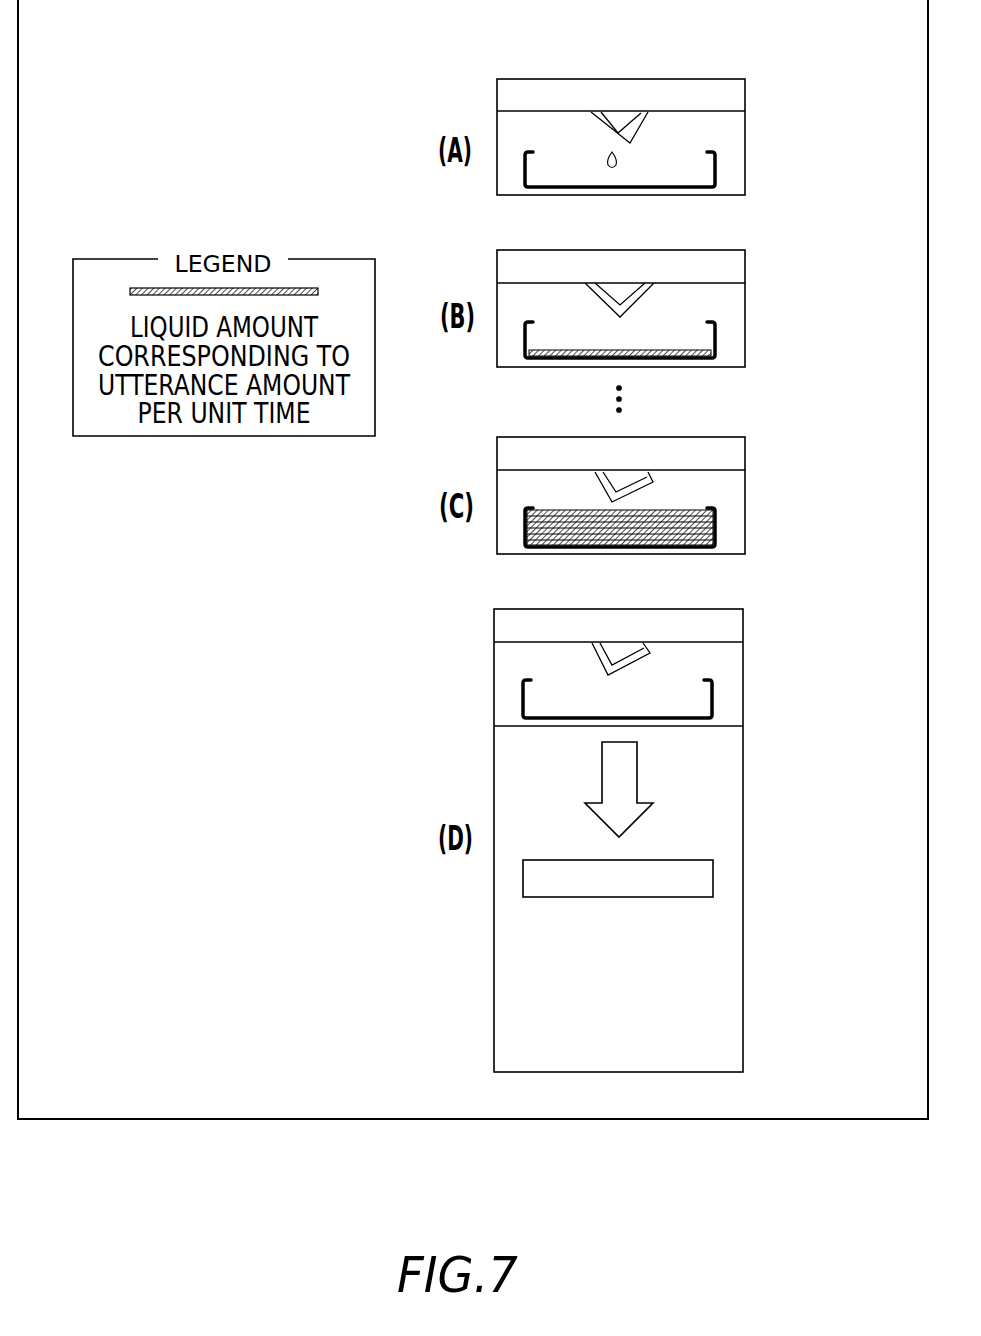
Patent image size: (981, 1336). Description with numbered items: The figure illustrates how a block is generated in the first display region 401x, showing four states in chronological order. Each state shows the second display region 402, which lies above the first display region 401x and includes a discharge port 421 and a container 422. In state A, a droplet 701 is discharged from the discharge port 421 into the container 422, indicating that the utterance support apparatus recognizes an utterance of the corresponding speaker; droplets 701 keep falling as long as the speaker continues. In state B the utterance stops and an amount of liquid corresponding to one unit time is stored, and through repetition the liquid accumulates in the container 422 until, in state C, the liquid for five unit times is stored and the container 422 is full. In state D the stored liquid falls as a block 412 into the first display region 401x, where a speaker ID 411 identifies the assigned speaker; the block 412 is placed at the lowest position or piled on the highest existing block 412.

The first display region 401x is at (720, 977).
The second display region 402 is at (746, 98).
The discharge port 421 is at (642, 123).
The container 422 is at (718, 158).
The speaker ID 411 is at (716, 328).
The block 412 is at (713, 875).
The droplet 701 is at (611, 163).